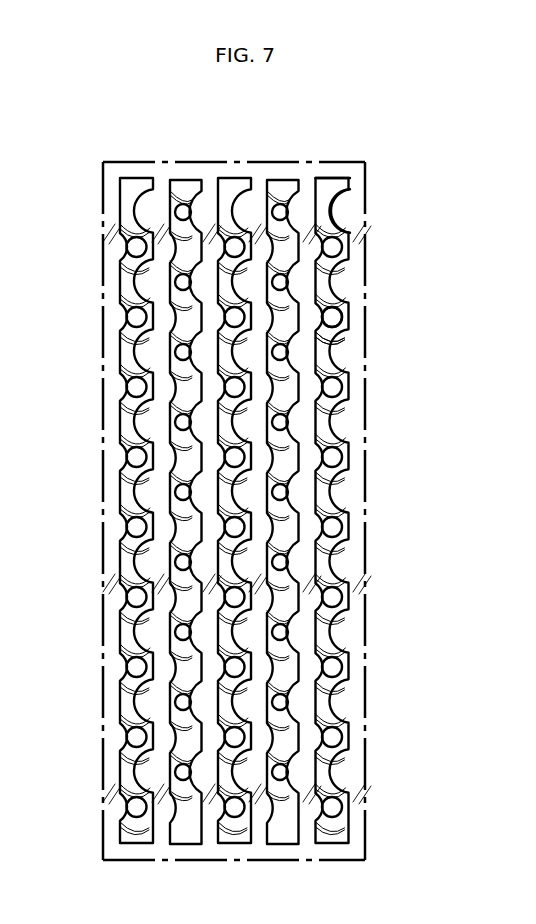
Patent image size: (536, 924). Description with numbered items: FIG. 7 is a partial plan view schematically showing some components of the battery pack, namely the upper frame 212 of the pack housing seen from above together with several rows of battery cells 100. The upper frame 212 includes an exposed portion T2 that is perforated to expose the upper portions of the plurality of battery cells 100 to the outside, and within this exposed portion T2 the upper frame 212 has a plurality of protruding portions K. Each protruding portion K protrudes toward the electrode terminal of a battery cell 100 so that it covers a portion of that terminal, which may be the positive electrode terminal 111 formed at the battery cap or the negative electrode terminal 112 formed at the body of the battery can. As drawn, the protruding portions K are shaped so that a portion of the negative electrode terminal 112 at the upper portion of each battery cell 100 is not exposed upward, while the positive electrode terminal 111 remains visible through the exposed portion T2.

The upper frame 212 is at (118, 140).
The battery cell 100 is at (219, 216).
The exposed portion T2 is at (318, 197).
The protruding portion K is at (321, 250).
The positive electrode terminal 111 is at (334, 317).
The negative electrode terminal 112 is at (331, 351).